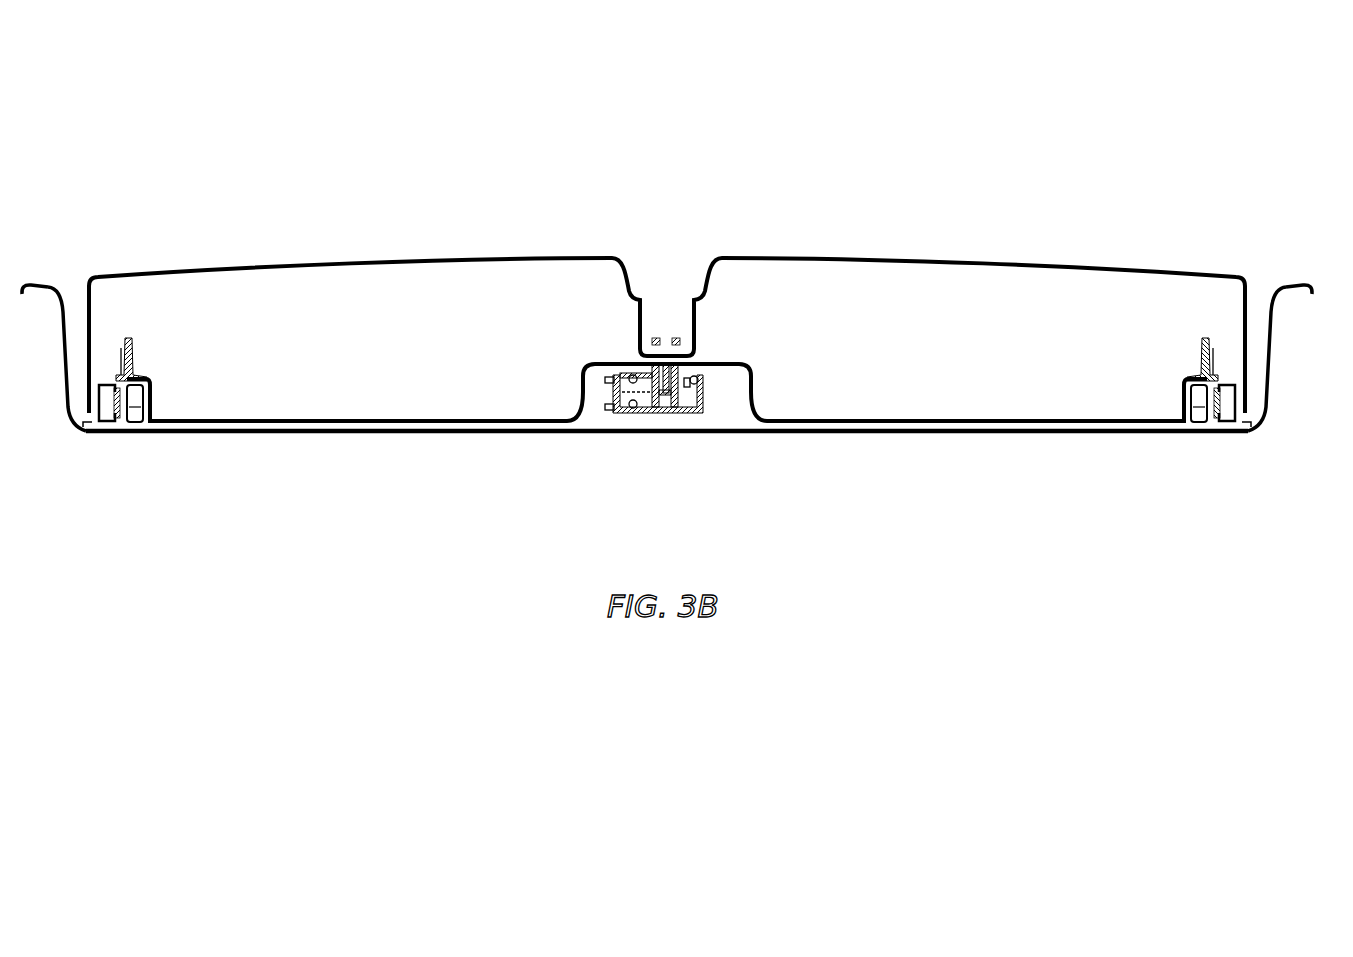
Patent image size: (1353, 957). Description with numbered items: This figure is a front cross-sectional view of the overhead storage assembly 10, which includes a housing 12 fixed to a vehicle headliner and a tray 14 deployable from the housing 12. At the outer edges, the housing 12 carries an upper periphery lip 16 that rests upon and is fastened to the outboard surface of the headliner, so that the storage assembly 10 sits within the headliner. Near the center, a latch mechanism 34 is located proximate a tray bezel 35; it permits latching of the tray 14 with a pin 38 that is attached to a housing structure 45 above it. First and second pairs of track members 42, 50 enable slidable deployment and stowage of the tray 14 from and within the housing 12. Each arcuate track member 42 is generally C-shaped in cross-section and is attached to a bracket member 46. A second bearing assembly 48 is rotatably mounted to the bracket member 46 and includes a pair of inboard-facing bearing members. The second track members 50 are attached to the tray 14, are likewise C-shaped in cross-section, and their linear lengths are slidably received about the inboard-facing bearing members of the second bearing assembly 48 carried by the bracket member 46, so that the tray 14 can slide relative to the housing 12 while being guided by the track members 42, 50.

The overhead storage assembly 10 is at (931, 103).
The housing 12 is at (62, 385).
The tray 14 is at (347, 433).
The upper periphery lip 16 is at (40, 296).
The latch mechanism 34 is at (608, 396).
The tray bezel 35 is at (578, 397).
The pin 38 is at (640, 325).
The arcuate track member 42 is at (100, 383).
The housing structure 45 is at (533, 258).
The bracket member 46 is at (133, 376).
The second bearing assembly 48 is at (135, 407).
The second track member 50 is at (128, 428).